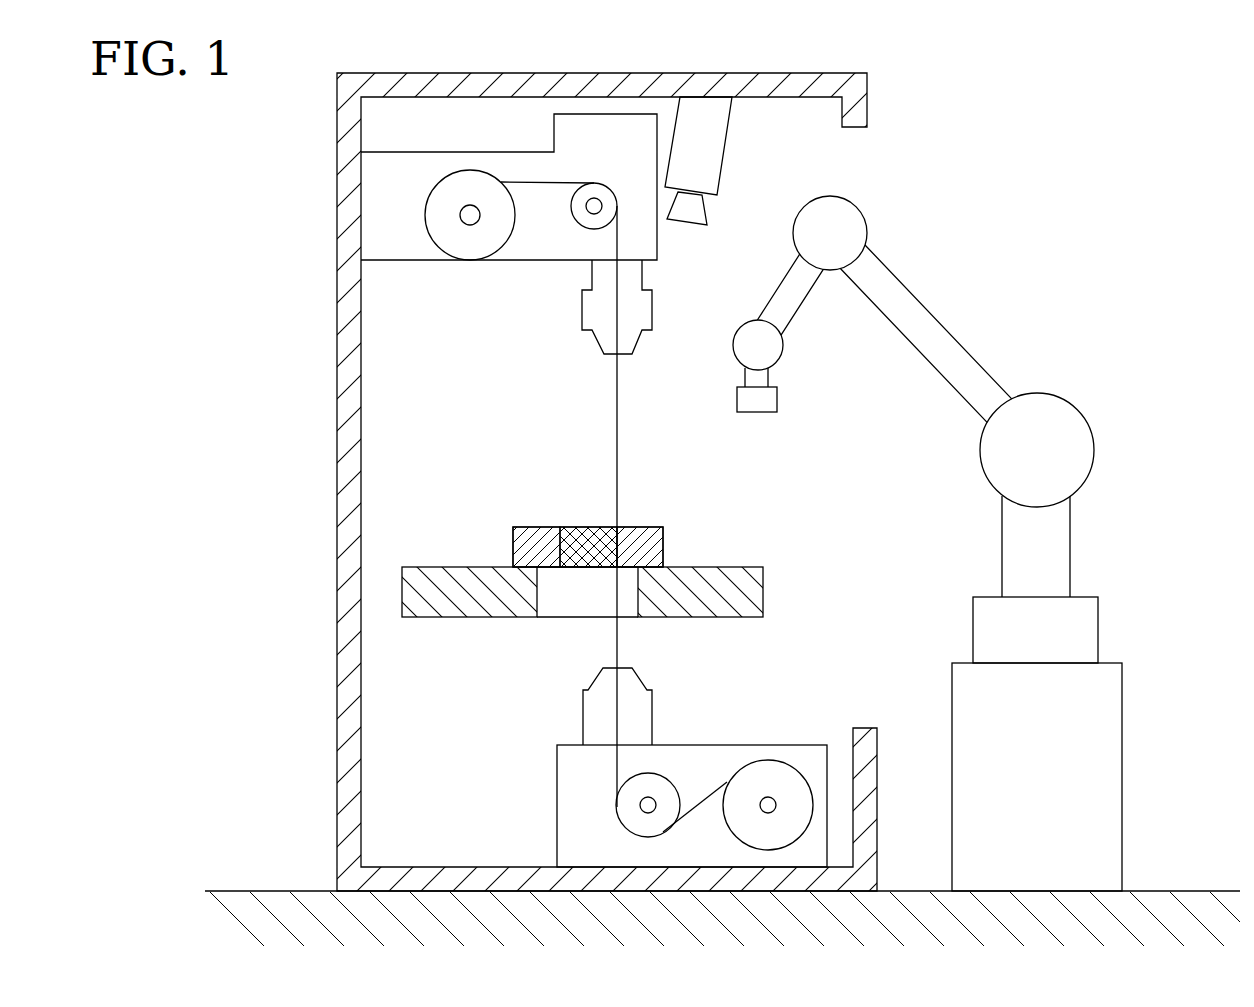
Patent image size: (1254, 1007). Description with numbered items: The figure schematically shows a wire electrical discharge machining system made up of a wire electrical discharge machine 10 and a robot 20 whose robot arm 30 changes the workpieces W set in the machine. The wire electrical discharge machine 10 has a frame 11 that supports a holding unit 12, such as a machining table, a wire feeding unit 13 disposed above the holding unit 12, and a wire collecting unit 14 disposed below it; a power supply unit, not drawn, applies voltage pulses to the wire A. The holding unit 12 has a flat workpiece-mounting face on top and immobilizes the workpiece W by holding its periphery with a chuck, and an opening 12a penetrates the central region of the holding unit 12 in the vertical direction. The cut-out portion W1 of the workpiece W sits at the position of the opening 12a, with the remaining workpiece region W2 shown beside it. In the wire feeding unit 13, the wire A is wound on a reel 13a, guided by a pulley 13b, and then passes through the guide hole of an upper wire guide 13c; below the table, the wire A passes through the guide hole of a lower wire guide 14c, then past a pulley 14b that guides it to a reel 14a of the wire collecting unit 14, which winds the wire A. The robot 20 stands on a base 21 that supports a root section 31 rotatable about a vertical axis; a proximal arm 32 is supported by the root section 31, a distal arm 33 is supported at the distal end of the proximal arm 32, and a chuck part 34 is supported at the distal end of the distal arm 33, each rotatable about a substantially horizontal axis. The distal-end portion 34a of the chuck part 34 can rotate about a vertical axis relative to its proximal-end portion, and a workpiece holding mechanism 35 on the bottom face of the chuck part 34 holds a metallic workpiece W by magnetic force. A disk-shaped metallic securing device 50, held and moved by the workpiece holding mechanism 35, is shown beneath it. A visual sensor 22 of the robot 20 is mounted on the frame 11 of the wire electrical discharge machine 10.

The wire electrical discharge machine 10 is at (313, 212).
The frame 11 is at (337, 428).
The holding unit 12 is at (633, 630).
The opening 12a is at (545, 618).
The wire feeding unit 13 is at (509, 201).
The reel 13a is at (430, 237).
The pulley 13b is at (575, 220).
The upper wire guide 13c is at (590, 340).
The wire collecting unit 14 is at (644, 767).
The reel 14a is at (773, 758).
The pulley 14b is at (616, 805).
The lower wire guide 14c is at (583, 715).
The robot 20 is at (939, 543).
The base 21 is at (1123, 765).
The visual sensor 22 is at (730, 125).
The robot arm 30 is at (896, 396).
The root section 31 is at (1070, 542).
The proximal arm 32 is at (937, 377).
The distal arm 33 is at (803, 307).
The chuck part 34 is at (750, 367).
The distal-end portion 34a is at (745, 380).
The workpiece holding mechanism 35 is at (778, 398).
The securing device 50 is at (750, 413).
The wire A is at (615, 395).
The workpiece W is at (633, 501).
The cut-out portion W1 is at (572, 523).
The second workpiece portion W2 is at (533, 525).